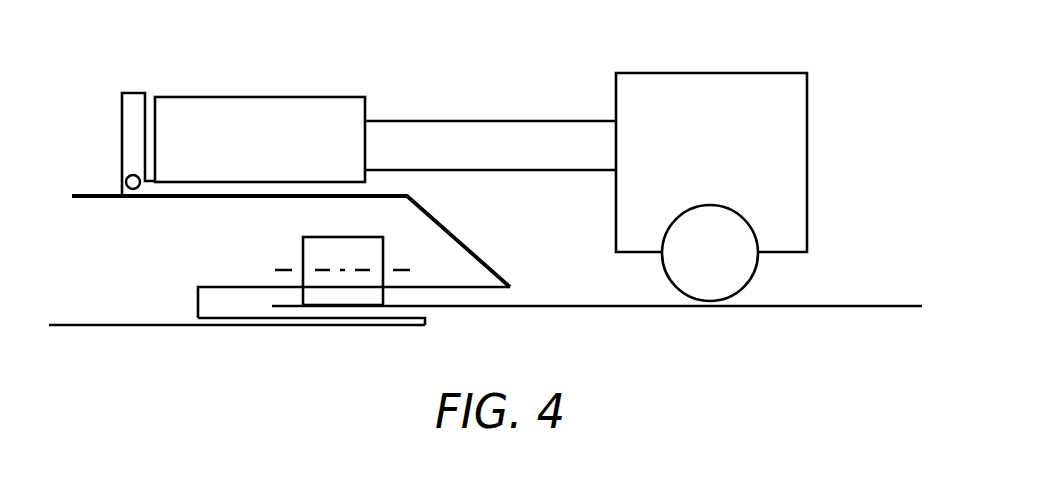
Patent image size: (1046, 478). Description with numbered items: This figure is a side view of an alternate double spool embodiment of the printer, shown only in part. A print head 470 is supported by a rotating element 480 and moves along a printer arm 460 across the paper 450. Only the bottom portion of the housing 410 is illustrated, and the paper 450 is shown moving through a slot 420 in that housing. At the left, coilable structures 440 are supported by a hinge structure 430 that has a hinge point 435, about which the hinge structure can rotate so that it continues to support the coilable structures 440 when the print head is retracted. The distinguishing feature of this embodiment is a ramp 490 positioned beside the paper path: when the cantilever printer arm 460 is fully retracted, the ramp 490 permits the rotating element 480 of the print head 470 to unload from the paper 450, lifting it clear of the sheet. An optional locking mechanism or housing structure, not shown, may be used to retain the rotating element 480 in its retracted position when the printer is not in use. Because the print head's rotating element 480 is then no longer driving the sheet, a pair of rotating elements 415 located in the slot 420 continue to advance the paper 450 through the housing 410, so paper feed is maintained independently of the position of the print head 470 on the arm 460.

The housing 410 is at (135, 326).
The rotating elements 415 is at (303, 247).
The slot 420 is at (233, 302).
The hinge structure 430 is at (122, 124).
The hinge point 435 is at (133, 190).
The coilable structures 440 is at (252, 97).
The paper 450 is at (820, 307).
The printer arm 460 is at (503, 120).
The print head 470 is at (740, 73).
The rotating element 480 is at (753, 230).
The ramp 490 is at (467, 250).